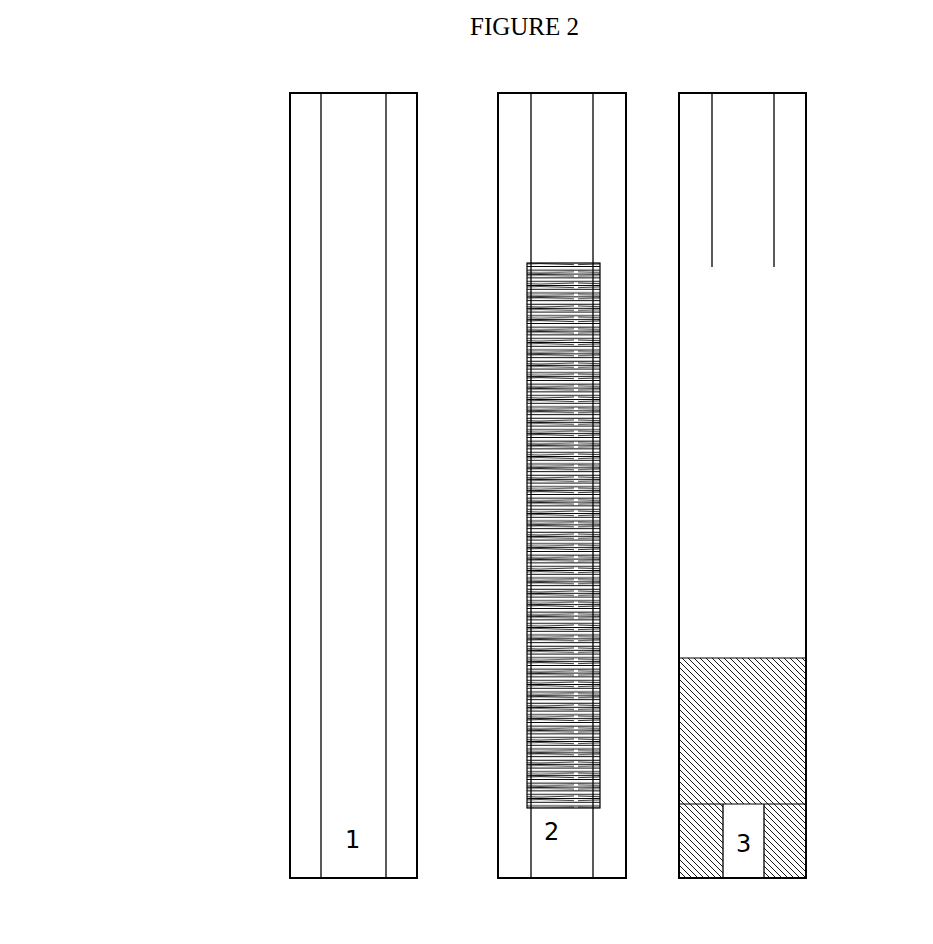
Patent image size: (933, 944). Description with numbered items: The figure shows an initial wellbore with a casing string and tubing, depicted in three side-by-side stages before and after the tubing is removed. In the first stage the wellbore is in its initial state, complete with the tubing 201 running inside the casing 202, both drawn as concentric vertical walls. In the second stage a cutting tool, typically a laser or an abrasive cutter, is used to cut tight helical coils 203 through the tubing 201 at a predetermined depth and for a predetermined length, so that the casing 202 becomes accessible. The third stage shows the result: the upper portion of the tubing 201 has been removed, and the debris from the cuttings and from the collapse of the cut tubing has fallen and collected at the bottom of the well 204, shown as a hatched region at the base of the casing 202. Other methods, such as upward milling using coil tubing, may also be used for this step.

The tubing 201 is at (321, 404).
The casing 202 is at (288, 442).
The helical coils 203 is at (533, 477).
The bottom of the well 204 is at (792, 718).